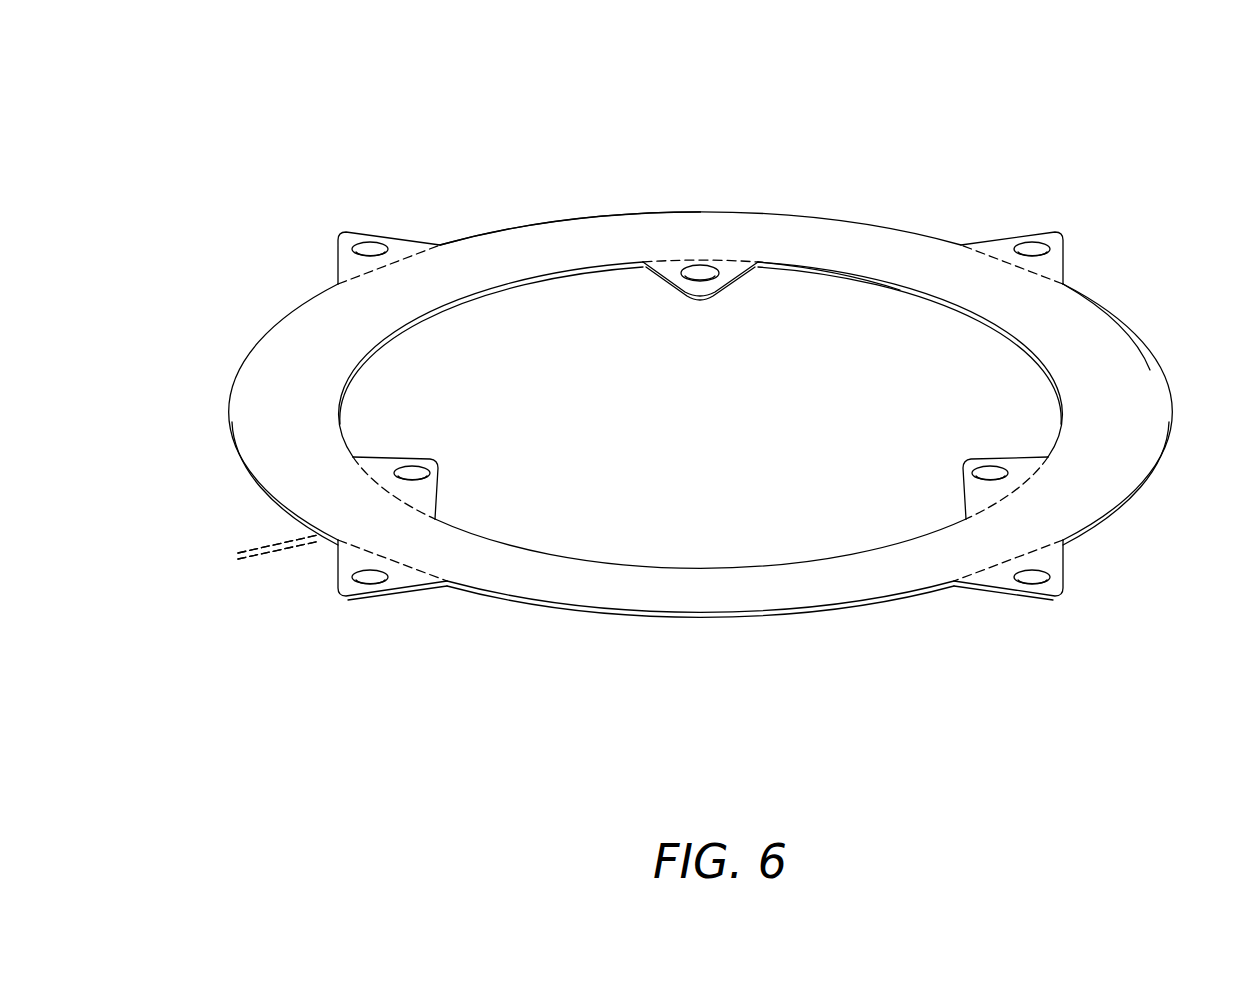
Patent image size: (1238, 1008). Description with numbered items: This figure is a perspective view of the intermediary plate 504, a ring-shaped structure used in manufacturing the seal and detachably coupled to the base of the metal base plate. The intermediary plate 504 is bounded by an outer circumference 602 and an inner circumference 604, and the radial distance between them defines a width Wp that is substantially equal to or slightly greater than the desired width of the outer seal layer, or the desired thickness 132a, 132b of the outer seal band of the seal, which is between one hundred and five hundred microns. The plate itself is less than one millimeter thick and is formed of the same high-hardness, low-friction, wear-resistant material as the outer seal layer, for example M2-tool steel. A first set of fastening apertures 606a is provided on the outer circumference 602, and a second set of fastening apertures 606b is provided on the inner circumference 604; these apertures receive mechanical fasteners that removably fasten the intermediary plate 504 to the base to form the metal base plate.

The intermediary plate 504 is at (1018, 90).
The outer circumference 602 is at (599, 203).
The inner circumference 604 is at (850, 292).
The first set of fastening apertures 606a is at (372, 248).
The second set of fastening apertures 606b is at (701, 272).
The thickness 132a is at (231, 598).
The thickness 132b is at (231, 598).
The width of the intermediary plate Wp is at (968, 370).